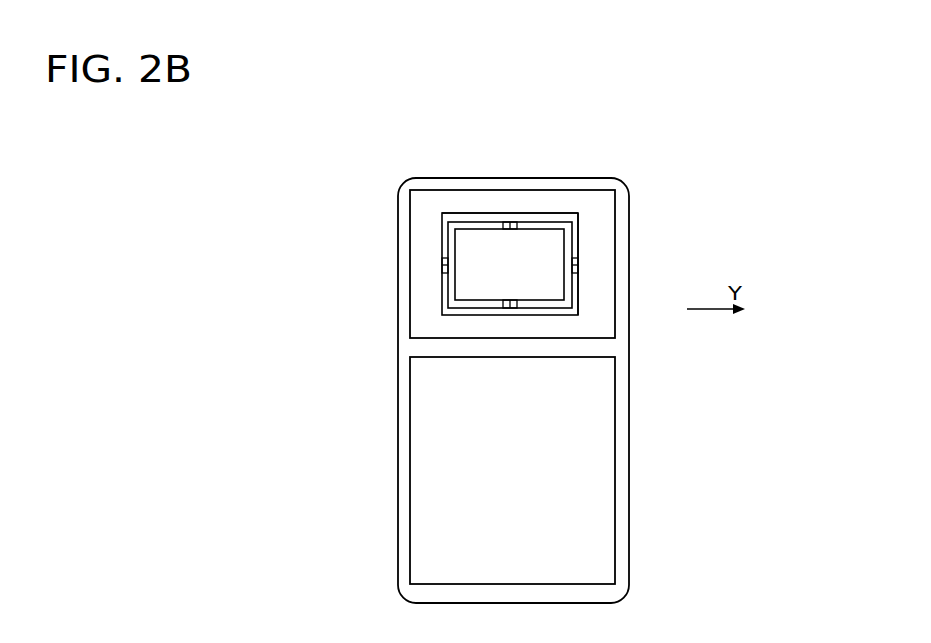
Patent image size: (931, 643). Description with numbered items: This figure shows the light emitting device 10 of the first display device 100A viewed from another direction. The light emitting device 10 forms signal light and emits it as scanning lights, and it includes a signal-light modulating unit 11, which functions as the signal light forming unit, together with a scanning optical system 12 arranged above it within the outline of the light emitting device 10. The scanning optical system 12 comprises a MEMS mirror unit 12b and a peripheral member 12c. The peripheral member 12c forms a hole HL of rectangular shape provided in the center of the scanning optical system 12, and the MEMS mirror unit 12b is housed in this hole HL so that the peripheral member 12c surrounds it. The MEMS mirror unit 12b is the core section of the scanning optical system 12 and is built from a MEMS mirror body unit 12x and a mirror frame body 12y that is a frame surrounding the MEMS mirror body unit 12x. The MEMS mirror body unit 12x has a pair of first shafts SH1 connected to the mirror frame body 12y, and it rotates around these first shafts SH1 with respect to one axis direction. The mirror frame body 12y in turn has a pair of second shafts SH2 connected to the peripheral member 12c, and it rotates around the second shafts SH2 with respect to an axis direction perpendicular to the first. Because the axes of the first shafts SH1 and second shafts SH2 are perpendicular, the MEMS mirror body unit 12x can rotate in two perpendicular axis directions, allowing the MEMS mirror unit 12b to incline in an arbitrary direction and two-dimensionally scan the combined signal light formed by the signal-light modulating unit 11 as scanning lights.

The first display device 100A is at (336, 111).
The light emitting device 10 is at (321, 144).
The signal-light modulating unit 11 is at (427, 422).
The scanning optical system 12 is at (346, 199).
The MEMS mirror unit 12b is at (436, 252).
The peripheral member 12c is at (420, 298).
The MEMS mirror body unit 12x is at (530, 240).
The mirror frame body 12y is at (473, 216).
The first shafts SH1 is at (507, 220).
The second shafts SH2 is at (577, 265).
The hole HL is at (571, 216).